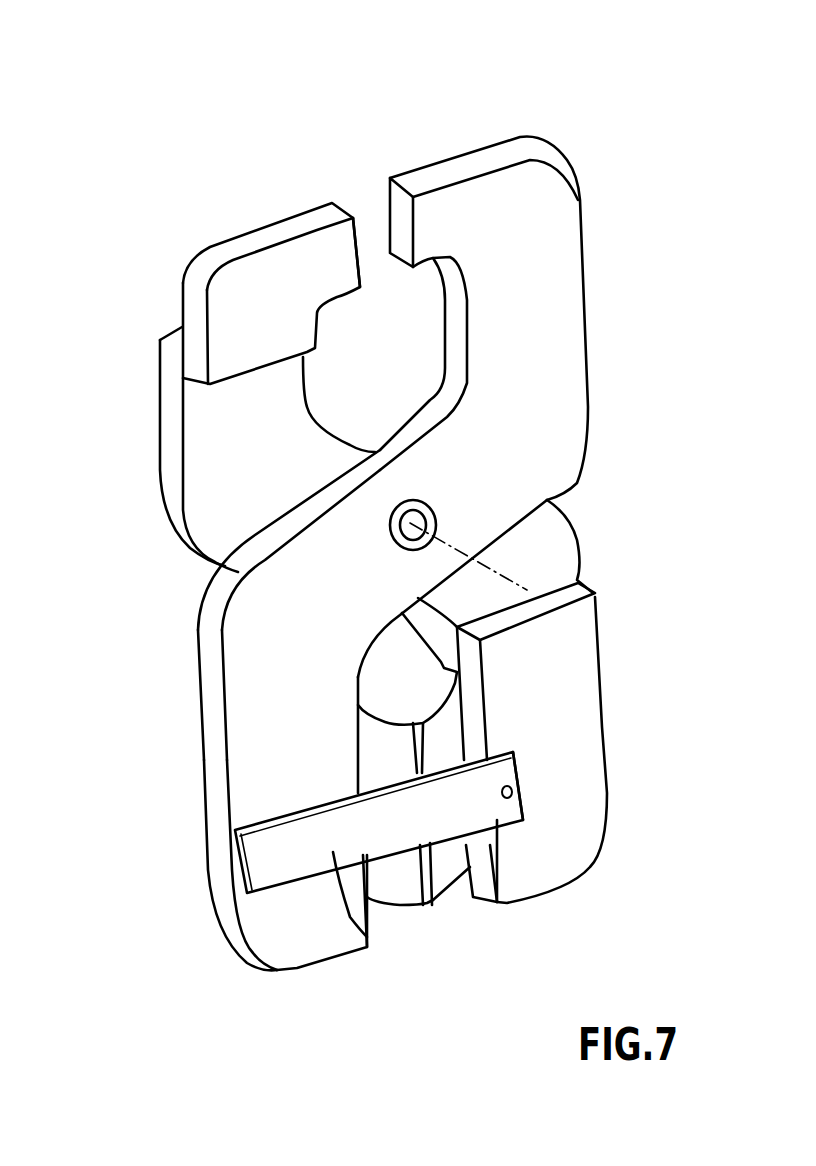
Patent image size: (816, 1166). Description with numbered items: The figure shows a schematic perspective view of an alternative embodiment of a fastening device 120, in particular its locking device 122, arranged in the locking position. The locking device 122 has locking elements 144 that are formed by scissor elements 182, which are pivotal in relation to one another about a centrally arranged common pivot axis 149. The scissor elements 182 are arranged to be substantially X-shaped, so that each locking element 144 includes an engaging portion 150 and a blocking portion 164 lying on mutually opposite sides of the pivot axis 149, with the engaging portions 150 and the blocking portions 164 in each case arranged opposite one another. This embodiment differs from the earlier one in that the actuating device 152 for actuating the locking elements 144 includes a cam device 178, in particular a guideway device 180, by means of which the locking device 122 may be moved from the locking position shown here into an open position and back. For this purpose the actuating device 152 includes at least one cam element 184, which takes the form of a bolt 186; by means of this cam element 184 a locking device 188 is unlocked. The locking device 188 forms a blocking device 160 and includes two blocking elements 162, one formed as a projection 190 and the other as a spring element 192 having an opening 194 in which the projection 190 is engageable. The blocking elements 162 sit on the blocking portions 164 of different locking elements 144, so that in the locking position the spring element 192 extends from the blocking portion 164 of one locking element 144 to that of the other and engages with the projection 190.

The fastening device 120 is at (593, 100).
The locking device 122 is at (606, 172).
The locking elements 144 is at (550, 323).
The engaging portion 150 is at (318, 250).
The pivot axis 149 is at (490, 567).
The cam device 178 is at (176, 601).
The guideway device 180 is at (156, 655).
The scissor elements 182 is at (503, 658).
The actuating device 152 is at (455, 904).
The blocking device 160 is at (205, 886).
The blocking elements 162 is at (307, 860).
The blocking portion 164 is at (290, 943).
The cam element 184 is at (457, 717).
The bolt 186 is at (453, 747).
The locking device 188 is at (368, 930).
The projection 190 is at (518, 780).
The spring element 192 is at (257, 830).
The opening 194 is at (505, 796).